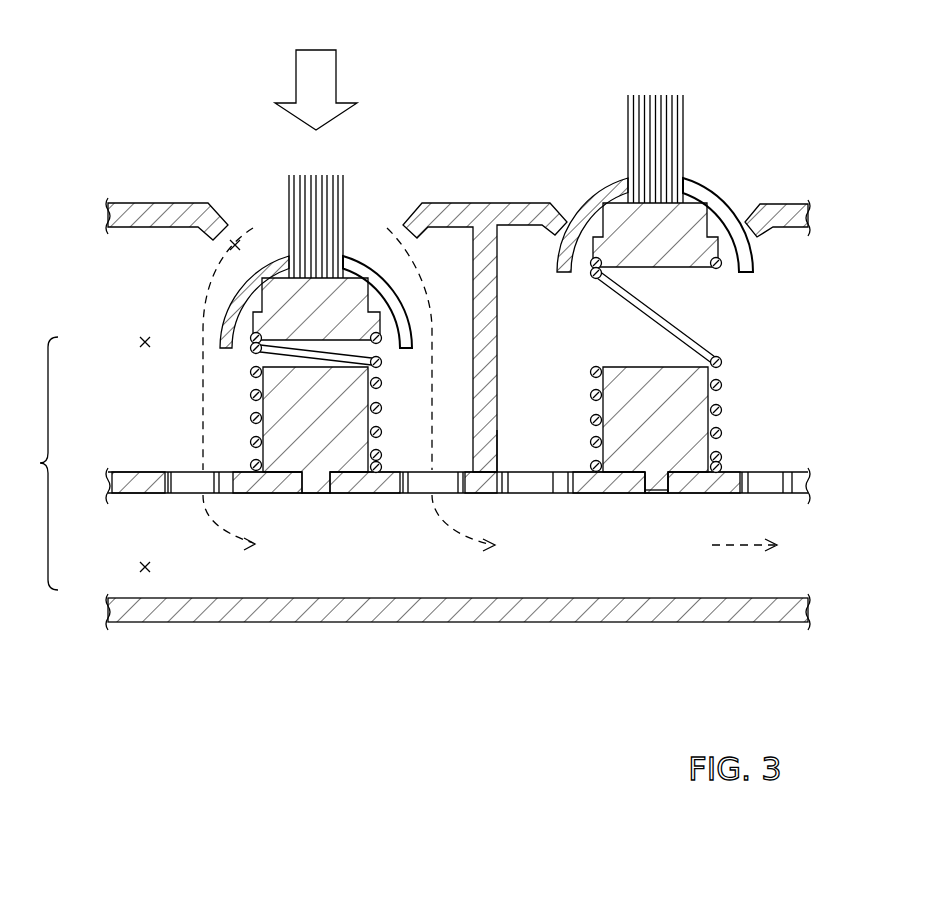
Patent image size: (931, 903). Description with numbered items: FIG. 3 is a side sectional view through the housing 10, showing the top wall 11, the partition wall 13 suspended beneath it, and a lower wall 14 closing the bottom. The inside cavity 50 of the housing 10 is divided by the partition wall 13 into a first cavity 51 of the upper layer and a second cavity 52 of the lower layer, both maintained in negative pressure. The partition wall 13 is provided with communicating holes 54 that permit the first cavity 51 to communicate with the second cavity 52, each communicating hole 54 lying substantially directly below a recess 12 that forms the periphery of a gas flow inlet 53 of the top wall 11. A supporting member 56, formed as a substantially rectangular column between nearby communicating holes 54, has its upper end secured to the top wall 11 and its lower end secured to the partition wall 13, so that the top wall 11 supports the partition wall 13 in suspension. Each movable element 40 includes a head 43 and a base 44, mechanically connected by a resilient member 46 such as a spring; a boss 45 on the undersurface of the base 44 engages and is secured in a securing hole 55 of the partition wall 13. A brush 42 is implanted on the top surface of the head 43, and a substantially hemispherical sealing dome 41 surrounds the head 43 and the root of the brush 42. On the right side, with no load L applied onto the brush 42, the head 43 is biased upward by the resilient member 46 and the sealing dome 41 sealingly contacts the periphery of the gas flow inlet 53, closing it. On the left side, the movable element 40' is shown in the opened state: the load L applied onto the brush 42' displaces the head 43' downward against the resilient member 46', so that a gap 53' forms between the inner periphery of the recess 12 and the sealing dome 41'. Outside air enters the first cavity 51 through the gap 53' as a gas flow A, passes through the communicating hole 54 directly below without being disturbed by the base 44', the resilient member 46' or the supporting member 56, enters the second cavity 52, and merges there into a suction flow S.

The housing 10 is at (137, 90).
The top wall 11 is at (185, 203).
The recess 12 is at (553, 222).
The partition wall 13 is at (130, 488).
The bottom plate 14 is at (178, 622).
The movable element 40 is at (666, 290).
The movable element 40' is at (346, 312).
The sealing dome 41 is at (655, 203).
The sealing dome 41' is at (343, 302).
The brush 42 is at (623, 145).
The brush 42' is at (292, 226).
The head 43 is at (656, 204).
The head 43' is at (361, 314).
The base 44 is at (684, 430).
The base 44' is at (343, 430).
The boss 45 is at (648, 488).
The resilient member 46 is at (669, 318).
The resilient member 46' is at (362, 371).
The inside cavity 50 is at (79, 463).
The first cavity 51 is at (145, 342).
The second cavity 52 is at (145, 567).
The gas flow inlet 53 is at (472, 389).
The gap 53' is at (200, 389).
The communicating hole 54 is at (459, 492).
The securing hole 55 is at (665, 500).
The supporting member 56 is at (490, 443).
The load L is at (316, 70).
The gas flow A is at (310, 547).
The suction flow S is at (758, 545).